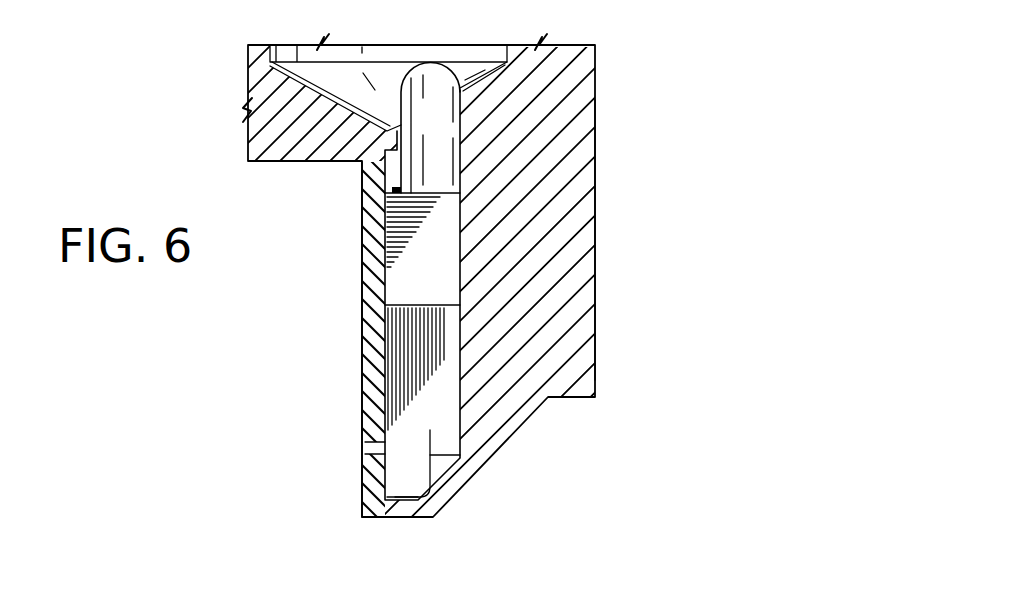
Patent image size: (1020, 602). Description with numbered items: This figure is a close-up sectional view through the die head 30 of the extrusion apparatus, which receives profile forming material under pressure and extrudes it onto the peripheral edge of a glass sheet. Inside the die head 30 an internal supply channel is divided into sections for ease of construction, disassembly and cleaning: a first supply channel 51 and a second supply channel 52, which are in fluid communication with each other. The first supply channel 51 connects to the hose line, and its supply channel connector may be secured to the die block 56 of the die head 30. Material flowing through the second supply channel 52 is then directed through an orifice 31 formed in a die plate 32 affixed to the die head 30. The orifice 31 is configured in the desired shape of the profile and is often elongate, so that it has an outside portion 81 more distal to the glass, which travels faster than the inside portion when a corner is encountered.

The die head 30 is at (530, 434).
The orifice 31 is at (364, 448).
The die plate 32 is at (348, 302).
The first supply channel 51 is at (473, 50).
The second supply channel 52 is at (440, 244).
The die block 56 is at (563, 307).
The outside portion 81 is at (400, 492).